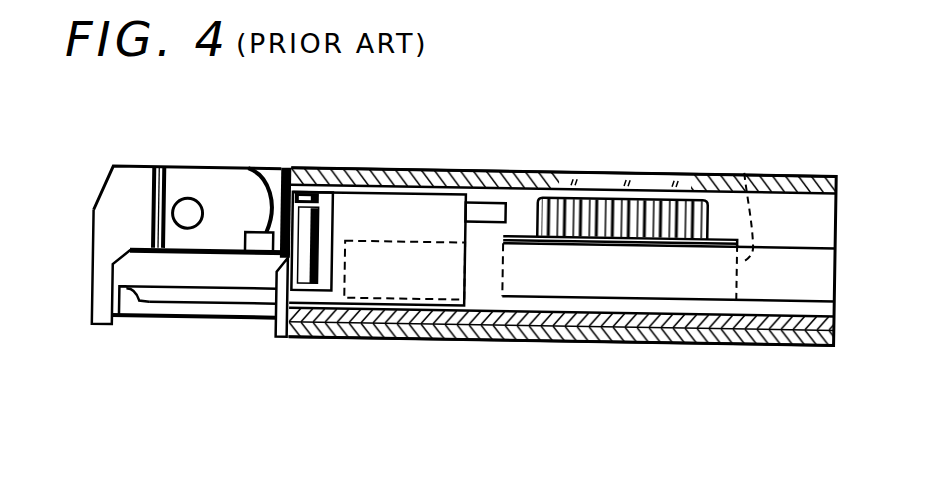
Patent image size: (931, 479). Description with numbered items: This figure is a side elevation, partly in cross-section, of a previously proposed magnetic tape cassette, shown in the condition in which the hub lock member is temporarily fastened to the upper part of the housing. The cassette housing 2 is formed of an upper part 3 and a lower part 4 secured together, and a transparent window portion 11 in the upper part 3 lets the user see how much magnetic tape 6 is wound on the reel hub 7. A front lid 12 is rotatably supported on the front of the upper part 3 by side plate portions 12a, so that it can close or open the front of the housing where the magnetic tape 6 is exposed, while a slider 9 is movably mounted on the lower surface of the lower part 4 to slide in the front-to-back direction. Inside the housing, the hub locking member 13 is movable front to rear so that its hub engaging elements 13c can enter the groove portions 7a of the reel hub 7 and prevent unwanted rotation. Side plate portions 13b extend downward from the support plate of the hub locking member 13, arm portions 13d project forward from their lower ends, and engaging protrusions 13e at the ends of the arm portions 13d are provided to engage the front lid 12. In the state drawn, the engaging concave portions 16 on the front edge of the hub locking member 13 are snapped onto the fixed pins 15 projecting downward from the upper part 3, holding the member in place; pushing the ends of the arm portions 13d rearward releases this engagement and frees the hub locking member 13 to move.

The cassette housing 2 is at (785, 168).
The upper half or part 3 is at (418, 167).
The lower half or part 4 is at (598, 336).
The magnetic tape 6 is at (673, 275).
The reel hub 7 is at (743, 166).
The groove portion 7a is at (655, 204).
The slider 9 is at (322, 338).
The transparent window portion 11 is at (598, 168).
The front lid 12 is at (92, 213).
The side plate portion 12a is at (213, 181).
The hub locking member 13 is at (465, 270).
The side plate portion 13b is at (398, 281).
The hub engaging element 13c is at (488, 200).
The arm portion 13d is at (230, 299).
The engaging protrusion 13e is at (128, 319).
The fixed pin 15 is at (322, 223).
The engaging concave portion 16 is at (313, 168).